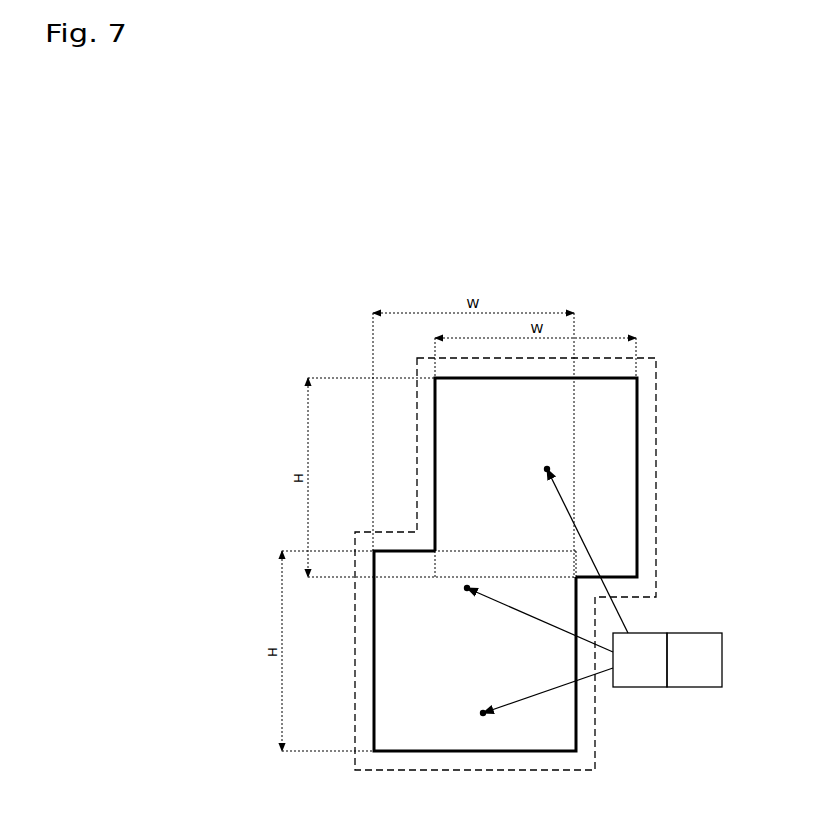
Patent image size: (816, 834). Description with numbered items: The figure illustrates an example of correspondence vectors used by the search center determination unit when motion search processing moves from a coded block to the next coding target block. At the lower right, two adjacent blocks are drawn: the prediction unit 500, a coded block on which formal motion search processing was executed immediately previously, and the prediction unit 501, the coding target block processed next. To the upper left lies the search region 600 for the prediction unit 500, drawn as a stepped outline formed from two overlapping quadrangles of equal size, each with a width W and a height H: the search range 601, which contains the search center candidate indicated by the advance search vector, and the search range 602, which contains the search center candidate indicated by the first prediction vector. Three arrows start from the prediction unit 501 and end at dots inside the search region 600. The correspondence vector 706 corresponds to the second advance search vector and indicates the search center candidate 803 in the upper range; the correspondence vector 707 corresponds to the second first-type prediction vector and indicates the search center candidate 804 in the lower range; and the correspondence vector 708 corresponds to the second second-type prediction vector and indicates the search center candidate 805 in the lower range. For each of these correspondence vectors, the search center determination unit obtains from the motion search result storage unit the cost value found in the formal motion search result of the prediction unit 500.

The prediction unit 500 is at (640, 687).
The prediction unit 501 is at (694, 687).
The search region 600 is at (657, 478).
The search range 601 is at (453, 478).
The search range 602 is at (383, 724).
The correspondence vector 706 is at (621, 617).
The correspondence vector 707 is at (516, 611).
The correspondence vector 708 is at (540, 695).
The search center candidate 803 is at (547, 466).
The search center candidate 804 is at (467, 592).
The search center candidate 805 is at (483, 717).